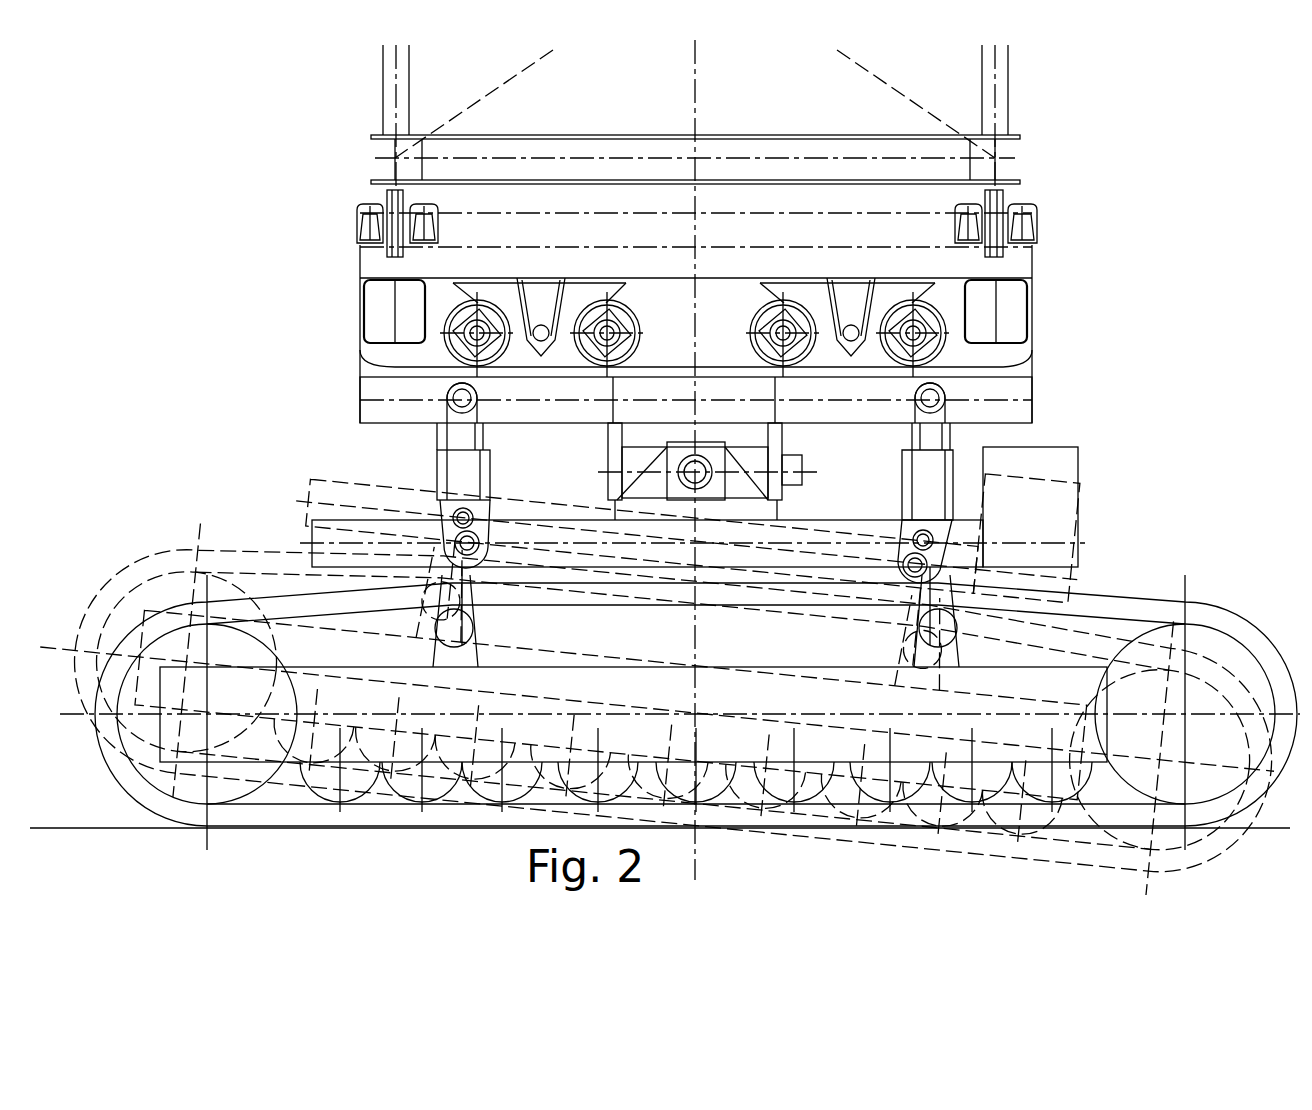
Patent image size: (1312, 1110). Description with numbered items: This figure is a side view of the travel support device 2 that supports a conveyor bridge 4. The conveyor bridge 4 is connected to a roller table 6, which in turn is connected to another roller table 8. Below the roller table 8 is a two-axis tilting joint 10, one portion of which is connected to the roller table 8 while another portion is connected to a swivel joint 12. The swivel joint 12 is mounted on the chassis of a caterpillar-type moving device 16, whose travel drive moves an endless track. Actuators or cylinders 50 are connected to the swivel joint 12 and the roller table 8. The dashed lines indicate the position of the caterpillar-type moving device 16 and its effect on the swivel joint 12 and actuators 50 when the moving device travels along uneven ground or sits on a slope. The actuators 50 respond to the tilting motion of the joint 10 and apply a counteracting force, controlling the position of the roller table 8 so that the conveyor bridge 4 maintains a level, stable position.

The travel support device 2 is at (225, 378).
The conveyor bridge 4 is at (1015, 98).
The roller table 6 is at (378, 198).
The roller table 8 is at (1043, 343).
The two-axis tilting joint 10 is at (806, 460).
The swivel joint 12 is at (550, 520).
The caterpillar-type moving device 16 is at (1207, 597).
The actuators or cylinders 50 is at (440, 456).